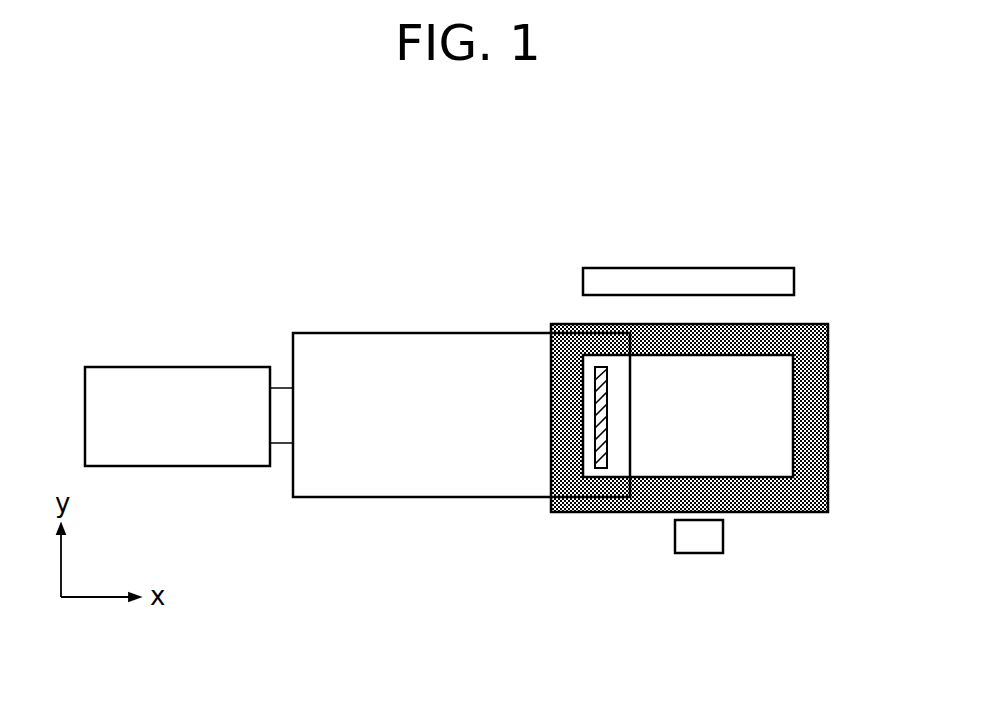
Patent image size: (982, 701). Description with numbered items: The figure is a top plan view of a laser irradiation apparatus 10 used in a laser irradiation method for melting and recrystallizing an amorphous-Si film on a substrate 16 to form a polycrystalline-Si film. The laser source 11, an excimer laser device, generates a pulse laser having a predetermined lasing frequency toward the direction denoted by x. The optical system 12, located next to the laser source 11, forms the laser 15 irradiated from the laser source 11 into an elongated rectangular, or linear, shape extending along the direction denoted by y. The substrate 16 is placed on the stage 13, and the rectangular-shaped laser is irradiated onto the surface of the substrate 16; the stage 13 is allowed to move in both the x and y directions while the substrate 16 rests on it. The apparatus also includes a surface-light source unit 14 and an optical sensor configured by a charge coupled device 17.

The laser irradiation apparatus 10 is at (674, 152).
The laser source 11 is at (132, 367).
The optical system 12 is at (342, 333).
The stage 13 is at (558, 323).
The surface-light source unit 14 is at (622, 267).
The laser 15 is at (607, 418).
The substrate 16 is at (798, 386).
The charge coupled device 17 is at (695, 553).